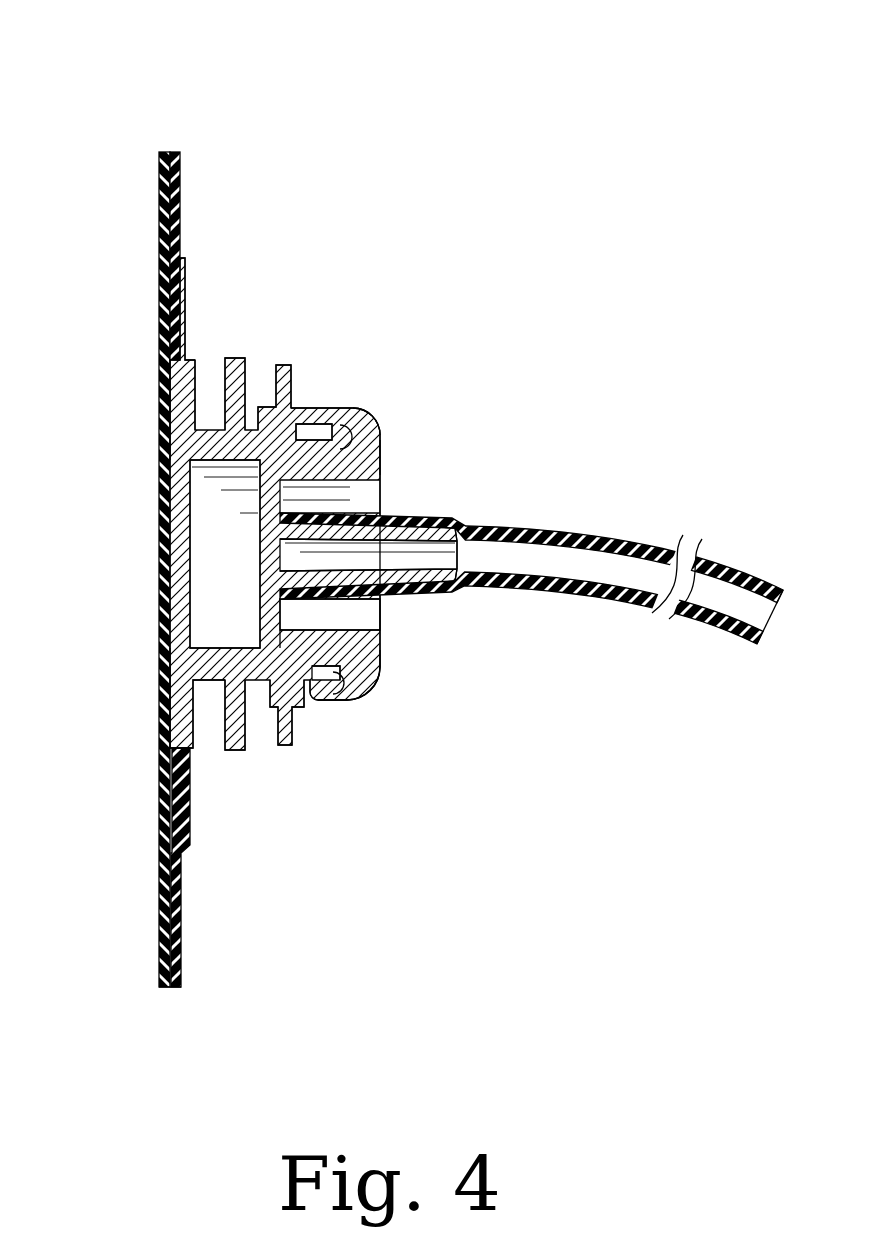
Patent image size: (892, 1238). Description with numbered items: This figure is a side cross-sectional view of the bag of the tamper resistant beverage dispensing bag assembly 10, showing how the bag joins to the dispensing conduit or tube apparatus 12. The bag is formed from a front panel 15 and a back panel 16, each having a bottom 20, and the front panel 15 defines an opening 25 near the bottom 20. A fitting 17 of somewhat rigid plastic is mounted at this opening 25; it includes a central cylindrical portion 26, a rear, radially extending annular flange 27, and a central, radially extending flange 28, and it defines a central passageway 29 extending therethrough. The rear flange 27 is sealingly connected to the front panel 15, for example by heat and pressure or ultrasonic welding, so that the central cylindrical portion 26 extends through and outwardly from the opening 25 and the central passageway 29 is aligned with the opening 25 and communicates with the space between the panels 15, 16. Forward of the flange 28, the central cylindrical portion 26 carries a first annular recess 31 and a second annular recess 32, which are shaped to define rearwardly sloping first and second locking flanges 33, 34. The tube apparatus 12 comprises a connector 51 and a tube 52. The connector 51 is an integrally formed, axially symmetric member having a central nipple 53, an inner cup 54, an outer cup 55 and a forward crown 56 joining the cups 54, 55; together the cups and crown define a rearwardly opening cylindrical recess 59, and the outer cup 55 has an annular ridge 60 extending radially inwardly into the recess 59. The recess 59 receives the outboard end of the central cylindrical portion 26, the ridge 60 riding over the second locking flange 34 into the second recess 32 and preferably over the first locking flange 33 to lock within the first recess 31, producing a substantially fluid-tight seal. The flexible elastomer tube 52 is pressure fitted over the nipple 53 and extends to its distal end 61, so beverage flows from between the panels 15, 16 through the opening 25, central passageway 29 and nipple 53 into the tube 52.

The bag assembly 10 is at (455, 118).
The tube apparatus 12 is at (486, 486).
The front panel 15 is at (181, 911).
The back panel 16 is at (160, 884).
The fitting 17 is at (235, 358).
The bottom 20 is at (165, 988).
The opening 25 is at (185, 368).
The central cylindrical portion 26 is at (190, 638).
The rear flange 27 is at (185, 412).
The central flange 28 is at (235, 750).
The central passageway 29 is at (190, 559).
The first annular recess 31 is at (285, 406).
The second annular recess 32 is at (358, 423).
The first locking flange 33 is at (321, 409).
The second locking flange 34 is at (383, 455).
The connector 51 is at (370, 405).
The tube 52 is at (658, 545).
The nipple 53 is at (432, 592).
The inner cup 54 is at (315, 635).
The outer cup 55 is at (347, 702).
The forward crown 56 is at (380, 668).
The recess 59 is at (367, 690).
The annular ridge 60 is at (293, 680).
The distal end 61 is at (719, 627).